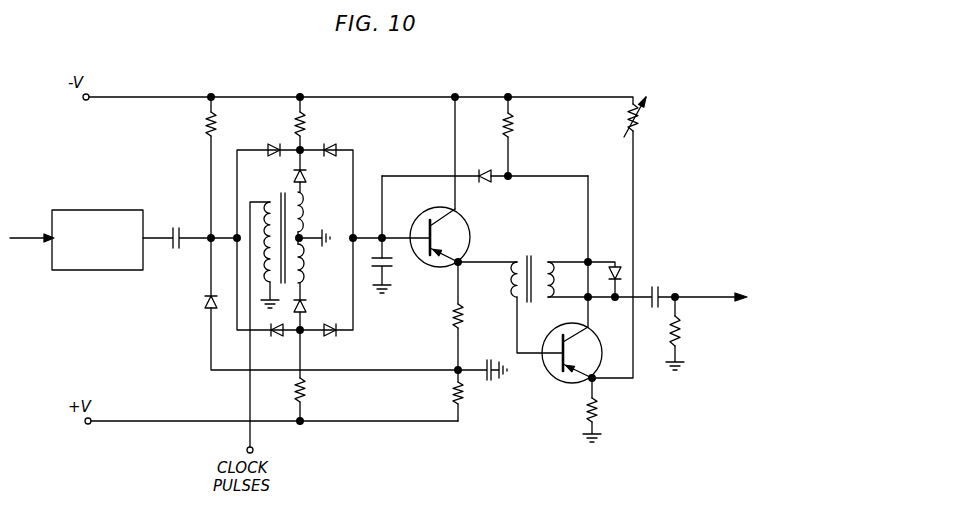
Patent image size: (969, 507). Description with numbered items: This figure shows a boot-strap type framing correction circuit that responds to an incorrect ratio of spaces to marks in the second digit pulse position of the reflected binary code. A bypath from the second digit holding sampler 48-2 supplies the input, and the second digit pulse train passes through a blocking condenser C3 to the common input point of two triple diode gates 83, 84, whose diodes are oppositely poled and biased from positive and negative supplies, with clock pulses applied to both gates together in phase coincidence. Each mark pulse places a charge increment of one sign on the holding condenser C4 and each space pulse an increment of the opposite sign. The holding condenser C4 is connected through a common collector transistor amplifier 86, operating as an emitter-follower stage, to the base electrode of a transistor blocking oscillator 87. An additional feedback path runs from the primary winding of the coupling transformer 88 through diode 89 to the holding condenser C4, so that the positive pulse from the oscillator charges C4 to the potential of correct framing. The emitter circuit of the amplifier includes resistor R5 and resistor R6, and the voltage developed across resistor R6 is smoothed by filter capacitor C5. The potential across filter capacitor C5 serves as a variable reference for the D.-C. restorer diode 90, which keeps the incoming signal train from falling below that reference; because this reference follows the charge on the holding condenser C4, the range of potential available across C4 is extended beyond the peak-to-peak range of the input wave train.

The second digit holding sampler 48-2 is at (100, 210).
The blocking condenser C3 is at (176, 227).
The triple diode gate 83 is at (333, 175).
The triple diode gate 84 is at (333, 355).
The D.-C. restorer diode 90 is at (206, 303).
The diode 89 is at (483, 172).
The common collector transistor amplifier 86 is at (467, 227).
The holding condenser C4 is at (395, 264).
The resistor R5 is at (449, 318).
The resistor R6 is at (449, 395).
The filter capacitor C5 is at (483, 374).
The coupling transformer 88 is at (532, 255).
The transistor blocking oscillator 87 is at (581, 319).